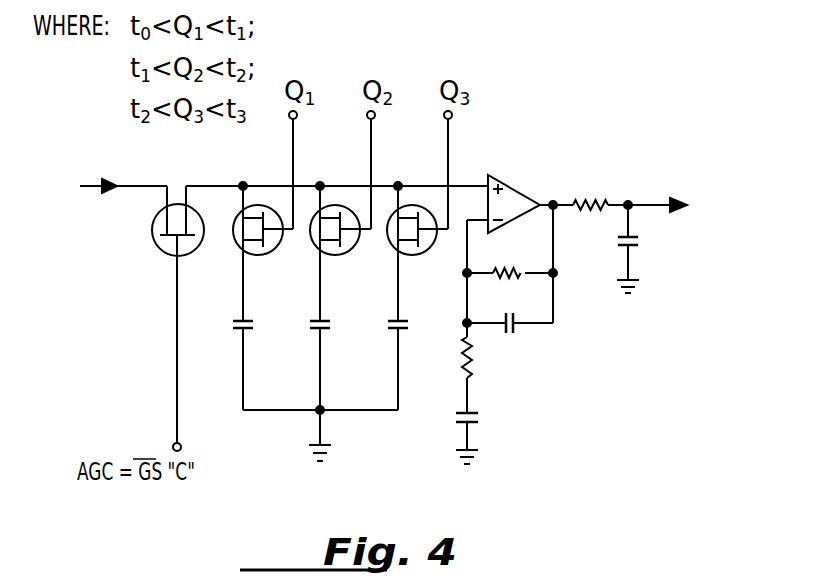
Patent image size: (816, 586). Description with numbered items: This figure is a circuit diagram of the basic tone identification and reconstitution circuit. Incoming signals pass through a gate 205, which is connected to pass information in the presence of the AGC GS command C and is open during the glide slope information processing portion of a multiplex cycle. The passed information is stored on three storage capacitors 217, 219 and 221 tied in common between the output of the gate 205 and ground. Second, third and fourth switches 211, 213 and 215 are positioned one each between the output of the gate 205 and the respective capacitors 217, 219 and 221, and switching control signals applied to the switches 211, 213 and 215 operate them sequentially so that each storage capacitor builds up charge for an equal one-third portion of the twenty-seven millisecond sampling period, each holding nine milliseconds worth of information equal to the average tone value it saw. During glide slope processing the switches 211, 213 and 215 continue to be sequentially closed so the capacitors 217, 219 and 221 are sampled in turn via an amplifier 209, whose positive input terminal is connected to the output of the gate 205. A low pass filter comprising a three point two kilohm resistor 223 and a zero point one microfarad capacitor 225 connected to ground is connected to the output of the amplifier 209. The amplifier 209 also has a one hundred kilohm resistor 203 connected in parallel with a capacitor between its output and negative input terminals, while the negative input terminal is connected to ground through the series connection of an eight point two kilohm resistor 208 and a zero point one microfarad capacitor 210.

The resistor 203 is at (495, 270).
The gate 205 is at (160, 218).
The resistor 208 is at (520, 328).
The amplifier 209 is at (510, 198).
The capacitor 210 is at (478, 412).
The second switch 211 is at (237, 245).
The third switch 213 is at (318, 244).
The fourth switch 215 is at (394, 238).
The storage capacitor 217 is at (238, 327).
The storage capacitor 219 is at (318, 330).
The storage capacitor 221 is at (392, 328).
The resistor 223 is at (600, 195).
The capacitor 225 is at (638, 248).